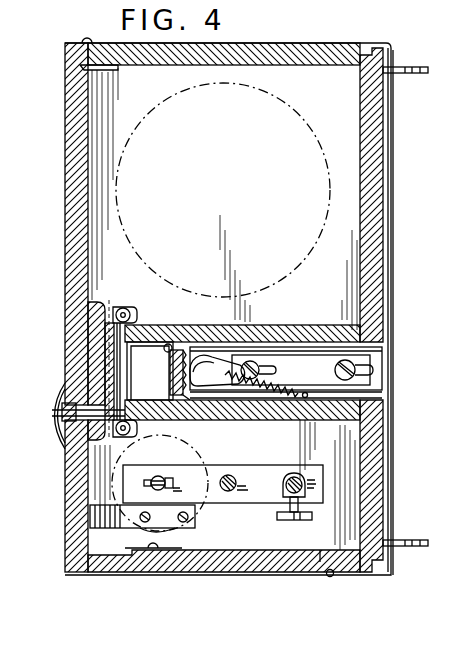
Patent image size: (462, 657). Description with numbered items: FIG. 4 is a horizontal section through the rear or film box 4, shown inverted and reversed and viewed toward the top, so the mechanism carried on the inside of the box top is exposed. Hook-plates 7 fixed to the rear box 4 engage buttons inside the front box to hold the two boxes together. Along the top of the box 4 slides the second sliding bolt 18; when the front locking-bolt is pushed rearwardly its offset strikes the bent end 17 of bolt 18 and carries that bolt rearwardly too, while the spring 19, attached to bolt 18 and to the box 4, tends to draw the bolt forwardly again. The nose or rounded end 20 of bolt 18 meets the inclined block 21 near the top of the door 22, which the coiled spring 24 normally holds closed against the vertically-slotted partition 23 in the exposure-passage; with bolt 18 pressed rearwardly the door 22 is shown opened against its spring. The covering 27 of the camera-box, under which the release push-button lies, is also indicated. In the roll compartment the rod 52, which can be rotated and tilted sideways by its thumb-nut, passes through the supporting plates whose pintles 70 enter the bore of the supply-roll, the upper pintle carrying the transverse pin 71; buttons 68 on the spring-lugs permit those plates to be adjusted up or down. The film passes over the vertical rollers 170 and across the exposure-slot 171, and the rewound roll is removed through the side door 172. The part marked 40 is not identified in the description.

The rear box 4 is at (229, 297).
The hook-plates 7 is at (426, 70).
The bent end 17 is at (384, 369).
The second sliding bolt 18 is at (302, 370).
The spring 19 is at (279, 396).
The nose or rounded end 20 is at (198, 357).
The inclined block 21 is at (176, 381).
The door 22 is at (172, 363).
The vertically-slotted partition 23 is at (184, 404).
The coiled spring 24 is at (150, 345).
The covering 27 is at (61, 431).
The screw 40 is at (300, 478).
The second rod 52 is at (230, 492).
The buttons 68 is at (293, 519).
The pintles 70 is at (160, 476).
The transversely-projecting pin 71 is at (151, 483).
The vertical rollers 170 is at (120, 300).
The exposure-slot 171 is at (120, 368).
The side door 172 is at (222, 573).